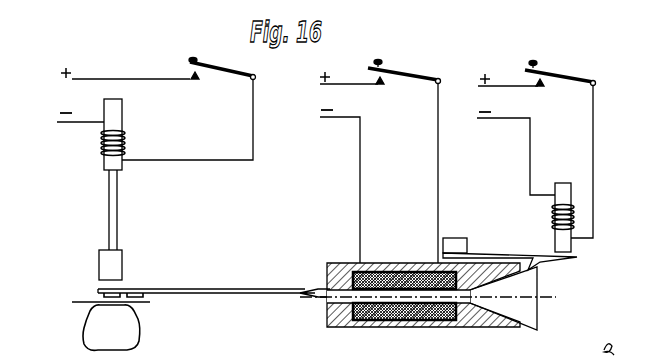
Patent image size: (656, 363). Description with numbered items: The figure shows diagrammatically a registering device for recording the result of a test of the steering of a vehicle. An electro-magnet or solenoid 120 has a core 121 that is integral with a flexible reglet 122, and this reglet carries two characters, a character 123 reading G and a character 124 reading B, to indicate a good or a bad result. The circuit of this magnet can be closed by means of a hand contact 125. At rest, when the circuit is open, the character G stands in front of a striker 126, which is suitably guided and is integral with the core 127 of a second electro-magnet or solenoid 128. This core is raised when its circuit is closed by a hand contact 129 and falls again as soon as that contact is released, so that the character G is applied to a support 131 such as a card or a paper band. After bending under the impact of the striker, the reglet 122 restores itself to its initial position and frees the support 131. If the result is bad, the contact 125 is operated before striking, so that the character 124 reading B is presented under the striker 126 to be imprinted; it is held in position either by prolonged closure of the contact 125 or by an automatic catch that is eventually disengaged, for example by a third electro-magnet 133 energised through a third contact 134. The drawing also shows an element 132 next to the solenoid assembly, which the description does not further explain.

The electro-magnet or solenoid 120 is at (402, 268).
The core 121 is at (320, 290).
The flexible reglet 122 is at (205, 291).
The character G 123 is at (102, 296).
The character B 124 is at (136, 298).
The hand contact 125 is at (404, 69).
The striker 126 is at (116, 259).
The core 127 is at (118, 164).
The second electro-magnet or solenoid 128 is at (100, 148).
The hand contact 129 is at (190, 73).
The support 131 is at (74, 303).
The electrode 132 is at (548, 261).
The third electro-magnet 133 is at (555, 218).
The third contact 134 is at (560, 70).